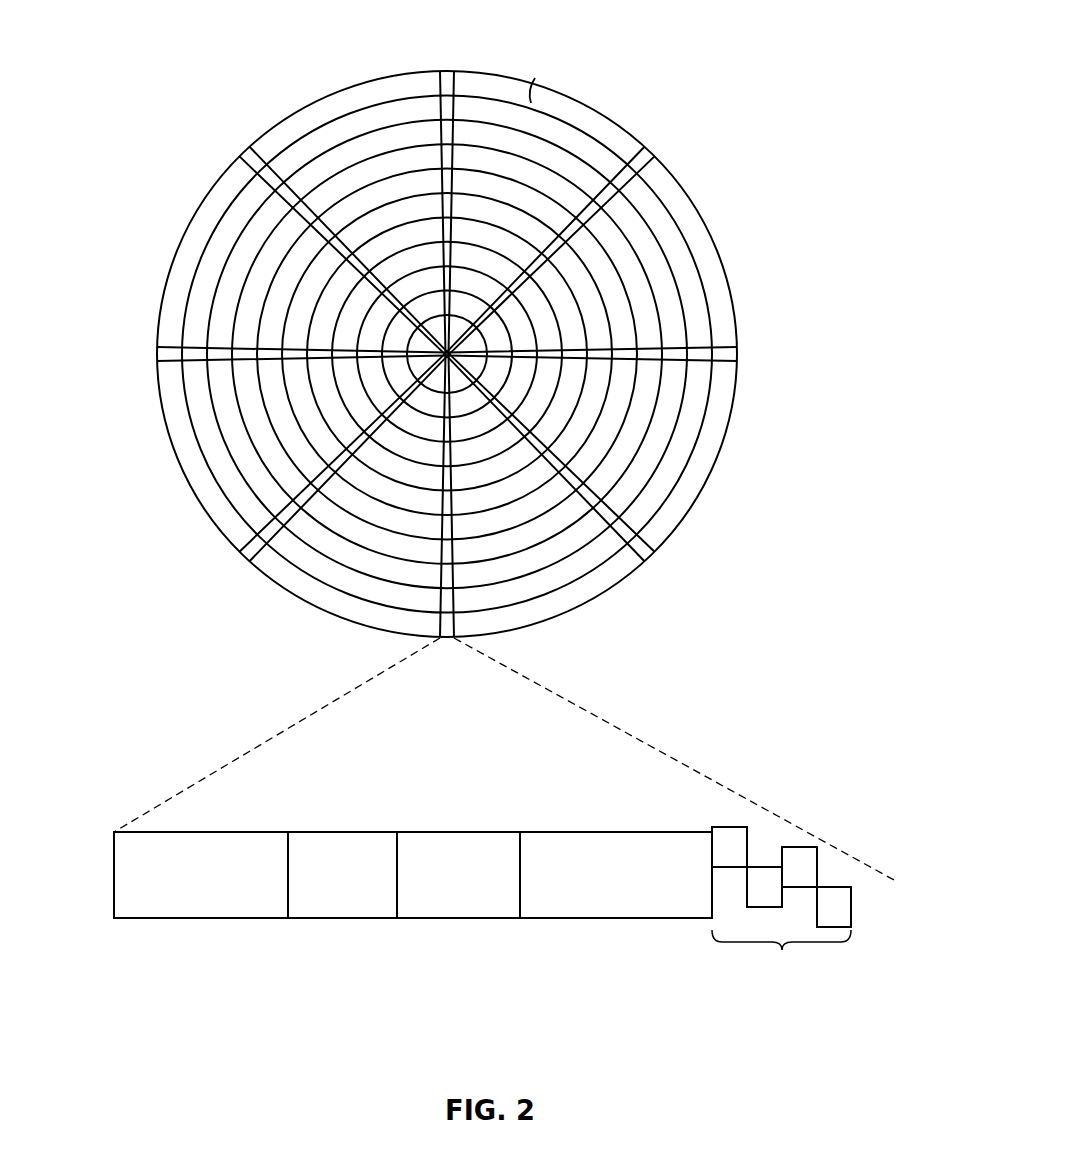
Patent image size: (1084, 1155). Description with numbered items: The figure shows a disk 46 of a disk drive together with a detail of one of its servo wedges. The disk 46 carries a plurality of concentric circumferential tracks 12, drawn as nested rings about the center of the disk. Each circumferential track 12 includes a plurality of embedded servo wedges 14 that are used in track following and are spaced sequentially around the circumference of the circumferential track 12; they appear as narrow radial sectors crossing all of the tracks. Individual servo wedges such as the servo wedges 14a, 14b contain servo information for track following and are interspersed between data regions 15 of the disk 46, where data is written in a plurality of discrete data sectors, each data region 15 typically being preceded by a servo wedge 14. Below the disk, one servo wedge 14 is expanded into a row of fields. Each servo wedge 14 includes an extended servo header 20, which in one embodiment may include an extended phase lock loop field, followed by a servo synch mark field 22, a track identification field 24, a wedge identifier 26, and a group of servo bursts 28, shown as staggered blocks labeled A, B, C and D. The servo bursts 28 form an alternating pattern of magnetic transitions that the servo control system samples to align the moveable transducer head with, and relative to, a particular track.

The disk 46 is at (264, 46).
The circumferential track 12 is at (199, 256).
The servo wedge 14 is at (448, 73).
The servo wedge 14a is at (246, 158).
The servo wedge 14b is at (167, 355).
The data region 15 is at (517, 118).
The extended servo header 20 is at (137, 920).
The servo synch mark (SSM) field 22 is at (303, 920).
The track identification (TKID) field 24 is at (431, 920).
The wedge identifier (ID) 26 is at (555, 920).
The group of servo bursts 28 is at (719, 816).